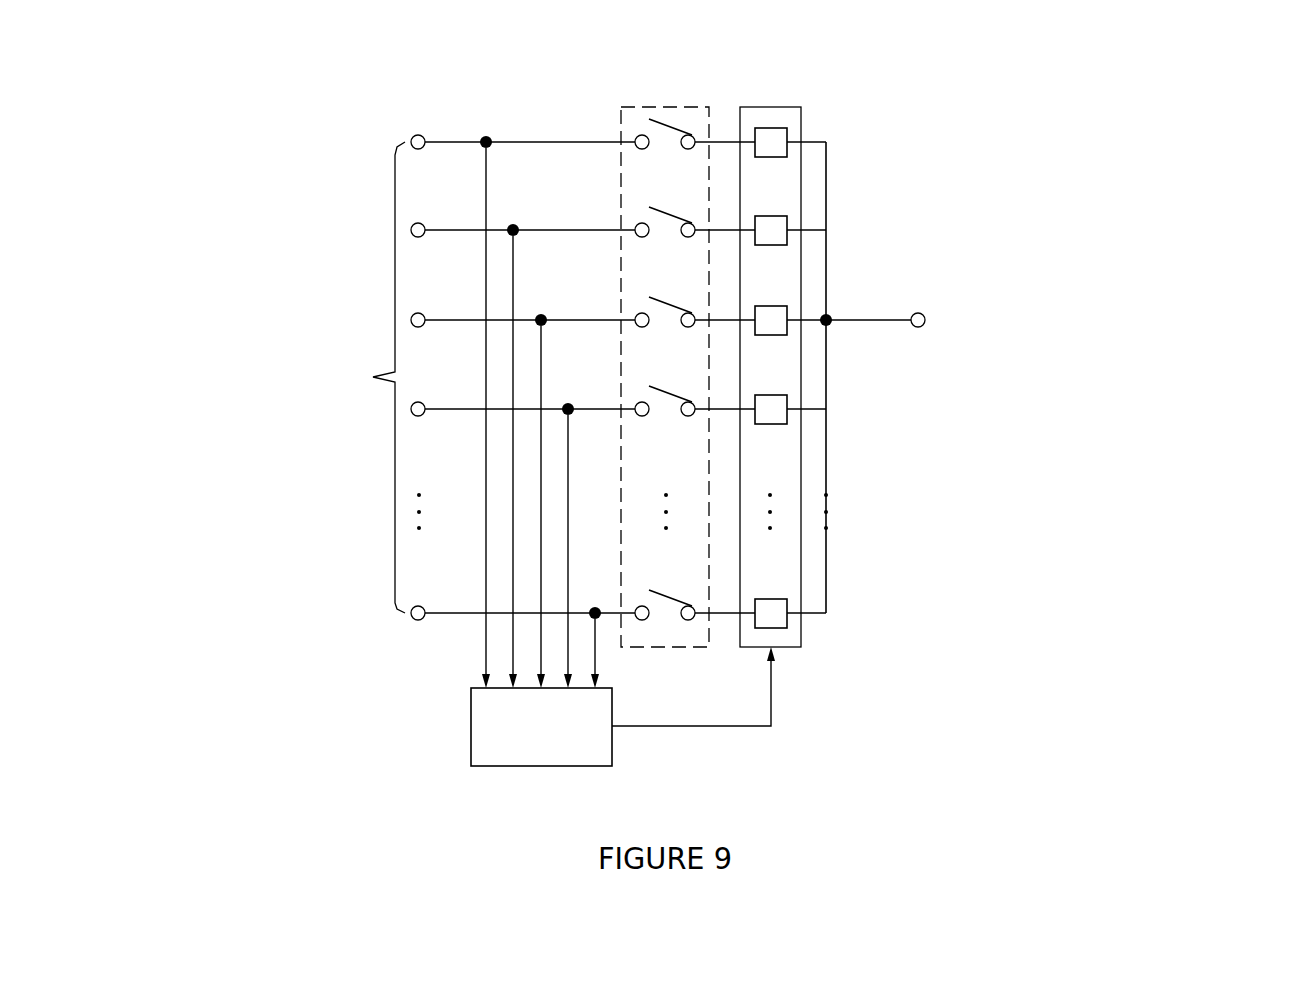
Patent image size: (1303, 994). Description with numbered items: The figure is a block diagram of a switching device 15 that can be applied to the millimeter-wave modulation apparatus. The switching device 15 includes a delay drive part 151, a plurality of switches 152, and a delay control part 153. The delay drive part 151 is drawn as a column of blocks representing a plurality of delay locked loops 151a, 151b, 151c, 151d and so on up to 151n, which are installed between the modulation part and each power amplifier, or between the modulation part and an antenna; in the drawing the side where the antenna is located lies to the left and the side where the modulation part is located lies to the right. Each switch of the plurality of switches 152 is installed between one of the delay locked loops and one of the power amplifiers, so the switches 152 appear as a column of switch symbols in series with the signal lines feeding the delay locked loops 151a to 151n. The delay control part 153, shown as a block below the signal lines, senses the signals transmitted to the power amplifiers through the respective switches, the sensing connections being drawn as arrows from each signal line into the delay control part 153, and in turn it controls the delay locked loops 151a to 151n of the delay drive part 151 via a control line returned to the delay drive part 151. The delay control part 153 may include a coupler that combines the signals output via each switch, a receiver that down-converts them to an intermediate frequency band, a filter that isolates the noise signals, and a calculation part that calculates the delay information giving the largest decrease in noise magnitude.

The switching device 15 is at (447, 110).
The delay drive part 151 is at (810, 344).
The delay locked loop 151a is at (787, 150).
The delay locked loop 151b is at (787, 238).
The delay locked loop 151c is at (787, 326).
The delay locked loop 151d is at (787, 416).
The delay locked loop 151n is at (787, 621).
The plurality of switches 152 is at (662, 107).
The delay control part 153 is at (471, 727).